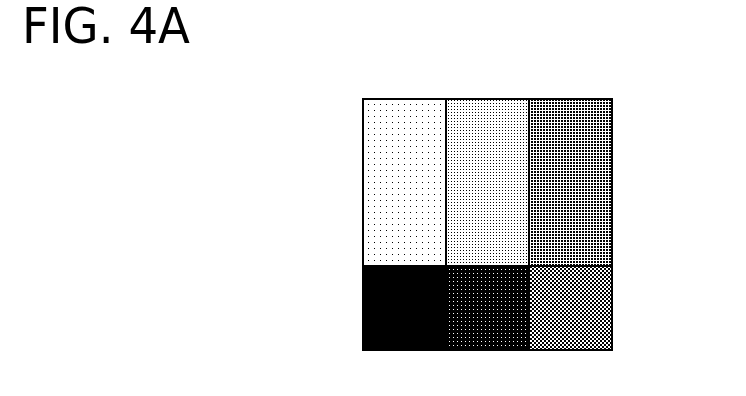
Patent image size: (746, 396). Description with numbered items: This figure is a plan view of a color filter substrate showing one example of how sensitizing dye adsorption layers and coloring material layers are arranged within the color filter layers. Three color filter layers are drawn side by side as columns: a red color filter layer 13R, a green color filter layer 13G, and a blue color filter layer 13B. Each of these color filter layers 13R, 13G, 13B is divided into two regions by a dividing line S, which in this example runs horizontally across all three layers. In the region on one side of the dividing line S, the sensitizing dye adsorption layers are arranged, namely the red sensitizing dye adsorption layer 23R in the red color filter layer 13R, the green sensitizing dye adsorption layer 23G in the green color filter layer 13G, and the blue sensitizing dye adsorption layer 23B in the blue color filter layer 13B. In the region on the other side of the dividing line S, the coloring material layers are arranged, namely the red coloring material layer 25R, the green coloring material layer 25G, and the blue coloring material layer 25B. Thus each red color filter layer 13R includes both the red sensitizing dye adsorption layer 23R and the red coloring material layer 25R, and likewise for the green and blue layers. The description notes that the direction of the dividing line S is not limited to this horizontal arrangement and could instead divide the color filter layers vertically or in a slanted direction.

The red color filter layer 13R is at (397, 83).
The green color filter layer 13G is at (484, 83).
The blue color filter layer 13B is at (574, 83).
The red sensitizing dye adsorption layer 23R is at (395, 143).
The green sensitizing dye adsorption layer 23G is at (487, 189).
The blue sensitizing dye adsorption layer 23B is at (570, 240).
The red coloring material layer 25R is at (423, 283).
The green coloring material layer 25G is at (510, 303).
The blue coloring material layer 25B is at (585, 335).
The dividing line S is at (566, 266).